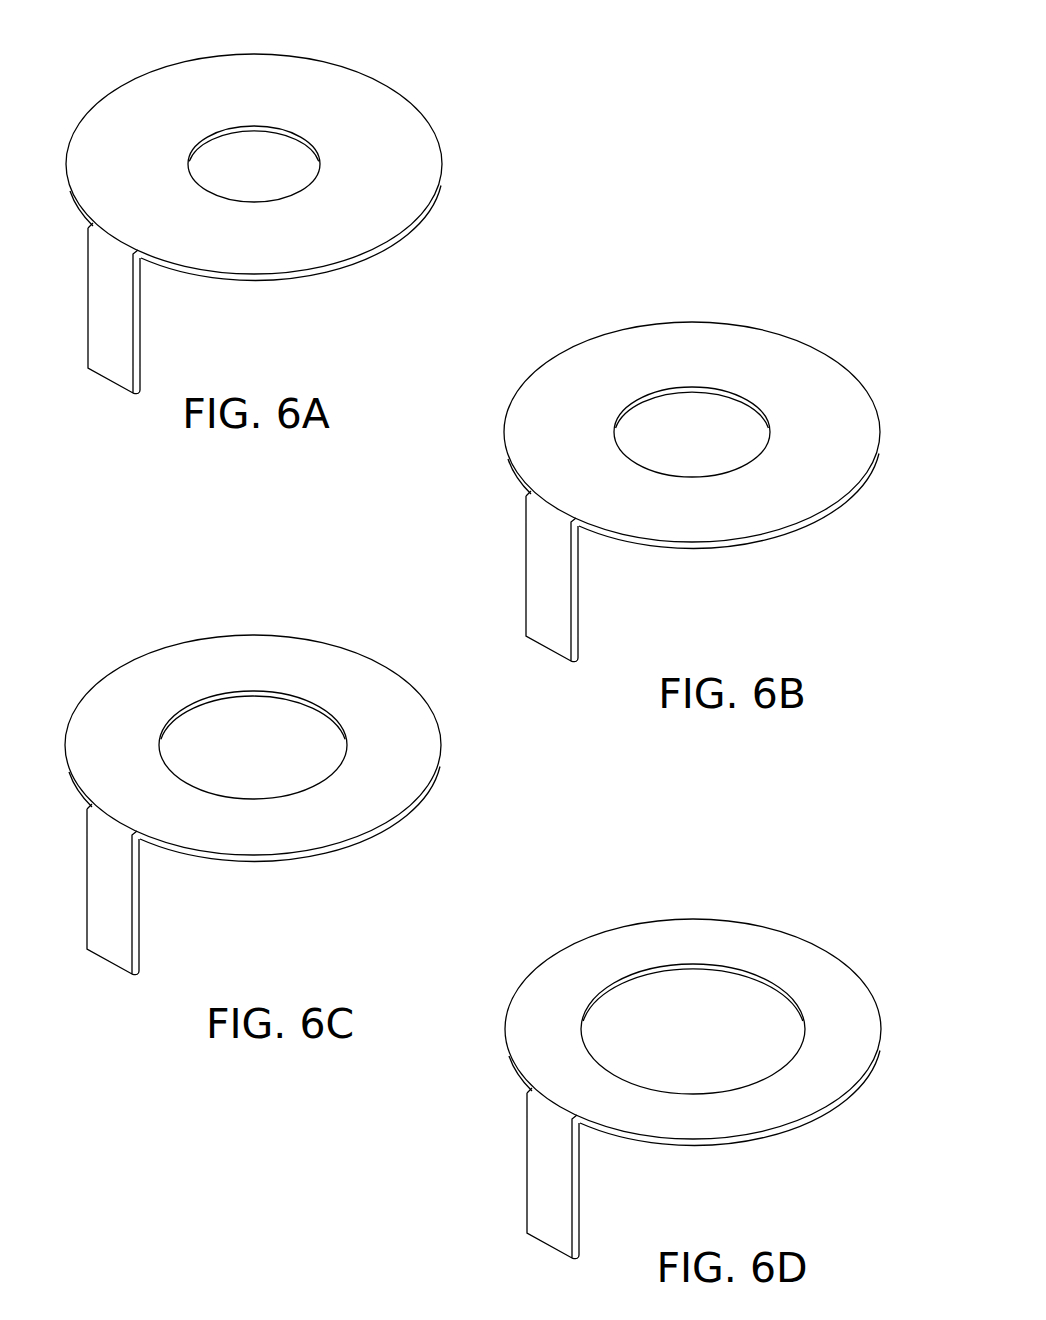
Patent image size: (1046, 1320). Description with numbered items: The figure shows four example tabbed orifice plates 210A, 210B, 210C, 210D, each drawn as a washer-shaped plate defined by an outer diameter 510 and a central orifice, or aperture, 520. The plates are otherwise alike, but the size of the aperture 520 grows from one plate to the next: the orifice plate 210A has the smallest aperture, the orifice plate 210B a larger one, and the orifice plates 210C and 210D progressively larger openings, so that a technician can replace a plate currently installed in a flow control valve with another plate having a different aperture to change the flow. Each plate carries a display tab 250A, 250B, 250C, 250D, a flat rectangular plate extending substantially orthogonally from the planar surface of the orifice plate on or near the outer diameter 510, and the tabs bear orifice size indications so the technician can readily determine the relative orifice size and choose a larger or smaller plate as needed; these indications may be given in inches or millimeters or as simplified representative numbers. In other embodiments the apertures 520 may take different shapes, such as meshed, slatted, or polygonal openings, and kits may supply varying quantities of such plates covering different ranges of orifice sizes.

In FIG. 6A, the tabbed orifice plate 210A is at (301, 237).
In FIG. 6B, the tabbed orifice plate 210B is at (687, 500).
In FIG. 6C, the tabbed orifice plate 210C is at (253, 821).
In FIG. 6D, the tabbed orifice plate 210D is at (651, 1063).
In FIG. 6A, the display tab 250A is at (107, 396).
In FIG. 6B, the display tab 250B is at (539, 658).
In FIG. 6C, the display tab 250C is at (110, 983).
In FIG. 6D, the display tab 250D is at (509, 1218).
In FIG. 6A, the outer diameter 510 is at (443, 137).
In FIG. 6B, the outer diameter 510 is at (880, 400).
In FIG. 6C, the outer diameter 510 is at (442, 720).
In FIG. 6D, the outer diameter 510 is at (882, 998).
In FIG. 6A, the orifice 520 is at (188, 157).
In FIG. 6B, the orifice 520 is at (772, 417).
In FIG. 6C, the orifice 520 is at (160, 727).
In FIG. 6D, the orifice 520 is at (580, 1007).